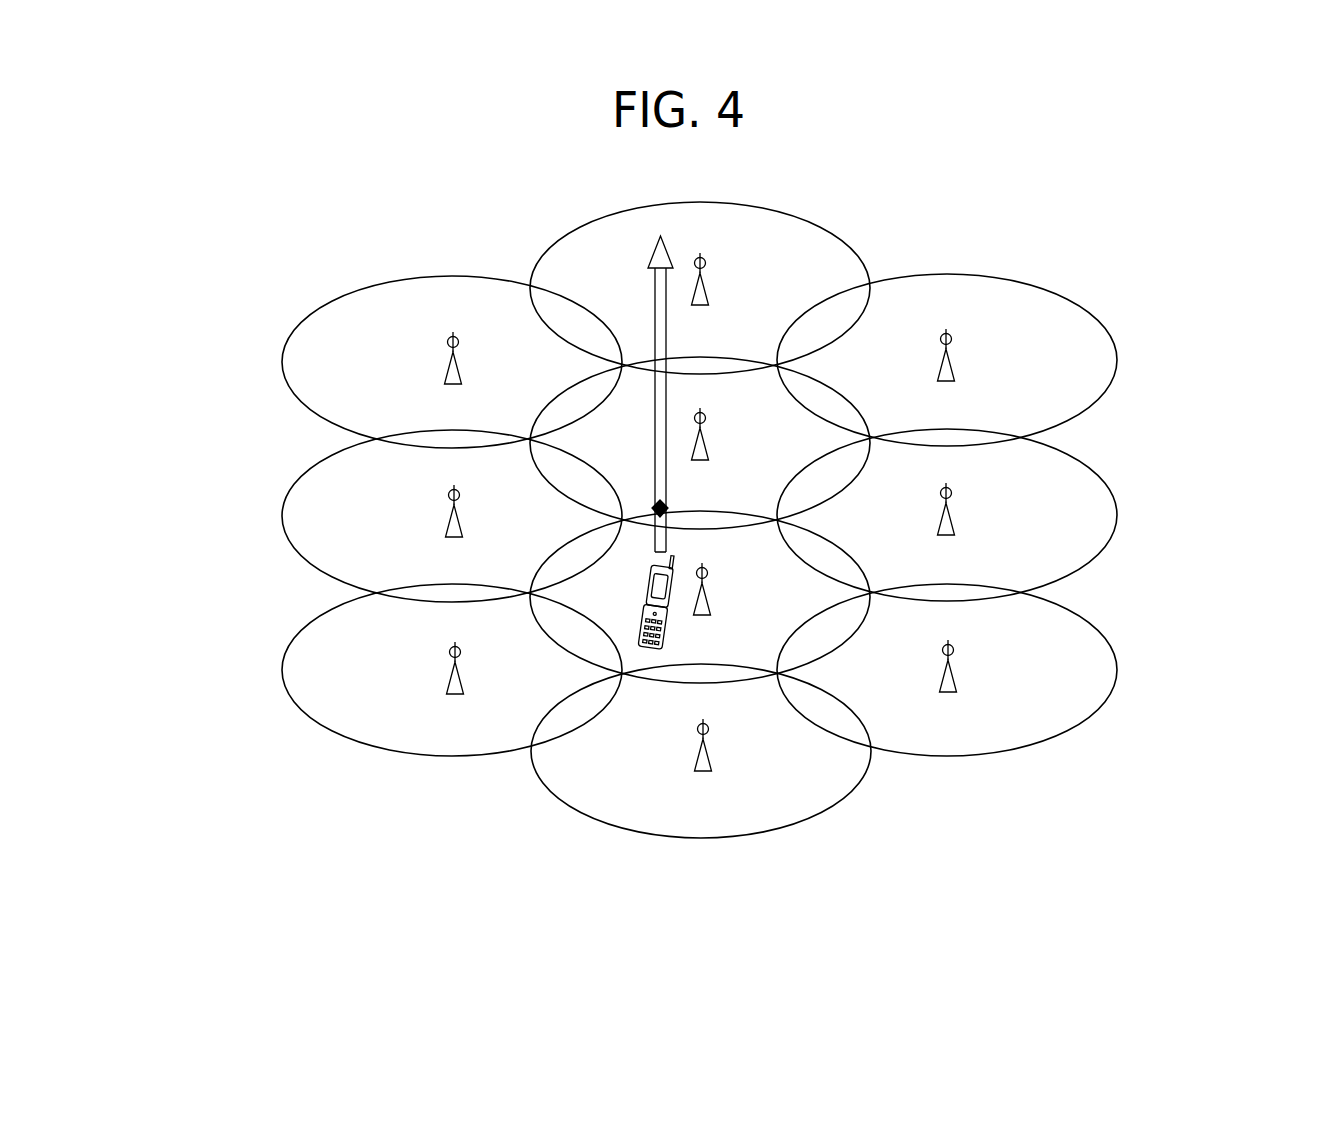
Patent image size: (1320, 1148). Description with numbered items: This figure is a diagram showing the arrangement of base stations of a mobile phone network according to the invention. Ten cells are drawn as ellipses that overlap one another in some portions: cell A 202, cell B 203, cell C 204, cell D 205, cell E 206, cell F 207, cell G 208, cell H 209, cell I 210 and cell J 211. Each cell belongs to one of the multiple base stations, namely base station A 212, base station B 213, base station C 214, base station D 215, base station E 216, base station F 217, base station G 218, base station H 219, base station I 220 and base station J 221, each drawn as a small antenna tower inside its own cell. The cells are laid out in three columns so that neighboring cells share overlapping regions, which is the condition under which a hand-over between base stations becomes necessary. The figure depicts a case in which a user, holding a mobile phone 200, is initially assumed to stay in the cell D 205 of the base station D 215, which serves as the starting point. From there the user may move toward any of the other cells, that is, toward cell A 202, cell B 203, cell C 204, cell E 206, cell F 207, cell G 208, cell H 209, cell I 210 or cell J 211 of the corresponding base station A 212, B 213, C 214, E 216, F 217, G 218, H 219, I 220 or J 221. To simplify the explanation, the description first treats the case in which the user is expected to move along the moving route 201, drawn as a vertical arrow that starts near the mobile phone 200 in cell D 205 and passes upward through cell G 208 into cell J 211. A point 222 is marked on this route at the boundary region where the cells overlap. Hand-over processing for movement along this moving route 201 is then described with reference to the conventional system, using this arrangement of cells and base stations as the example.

The mobile phone 200 is at (645, 650).
The moving route 201 is at (652, 298).
The cell A 202 is at (763, 812).
The cell B 203 is at (323, 717).
The cell C 204 is at (1052, 625).
The cell D 205 is at (758, 645).
The cell E 206 is at (303, 522).
The cell F 207 is at (1050, 465).
The cell G 208 is at (707, 388).
The cell H 209 is at (322, 402).
The cell I 210 is at (1050, 303).
The cell J 211 is at (805, 233).
The base station A 212 is at (707, 745).
The base station B 213 is at (463, 673).
The base station C 214 is at (958, 667).
The base station D 215 is at (707, 565).
The base station E 216 is at (463, 518).
The base station F 217 is at (958, 505).
The base station G 218 is at (704, 410).
The base station H 219 is at (463, 353).
The base station I 220 is at (958, 347).
The base station J 221 is at (703, 253).
The point 222 is at (656, 514).